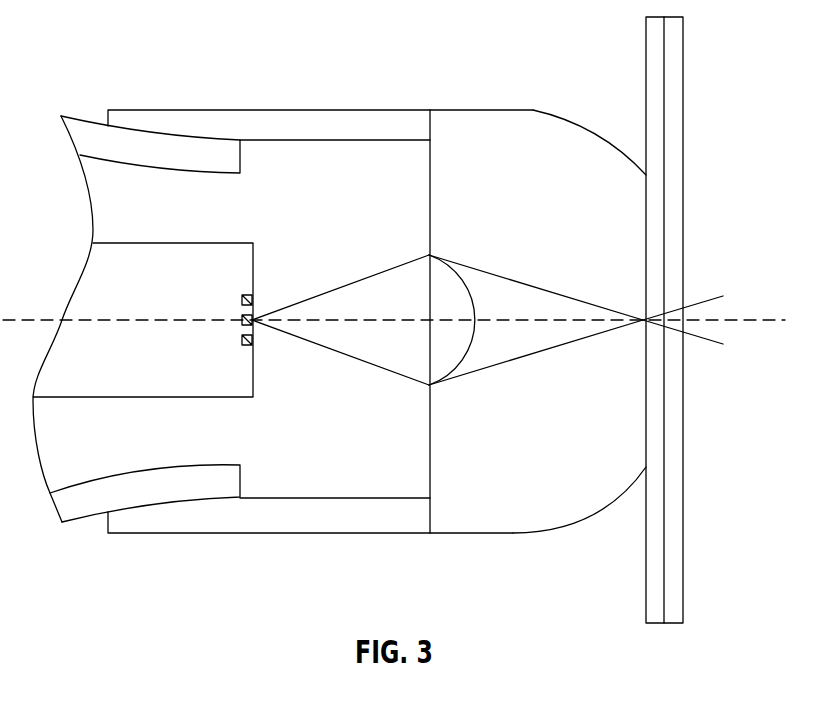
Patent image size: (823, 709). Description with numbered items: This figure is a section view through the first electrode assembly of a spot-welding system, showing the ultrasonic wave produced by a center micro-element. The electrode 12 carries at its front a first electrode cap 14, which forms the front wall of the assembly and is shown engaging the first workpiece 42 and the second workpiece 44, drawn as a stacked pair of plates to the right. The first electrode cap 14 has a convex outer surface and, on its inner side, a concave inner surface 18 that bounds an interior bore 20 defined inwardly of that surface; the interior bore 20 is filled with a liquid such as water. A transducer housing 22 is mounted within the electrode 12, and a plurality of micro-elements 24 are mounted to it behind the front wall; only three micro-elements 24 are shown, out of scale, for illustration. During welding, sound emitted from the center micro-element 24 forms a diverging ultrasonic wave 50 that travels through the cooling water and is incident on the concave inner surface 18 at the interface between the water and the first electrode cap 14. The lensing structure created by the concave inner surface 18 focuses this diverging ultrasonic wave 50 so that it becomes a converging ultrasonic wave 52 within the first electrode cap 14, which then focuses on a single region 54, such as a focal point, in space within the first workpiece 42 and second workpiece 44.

The electrode 12 is at (162, 134).
The first electrode cap 14 is at (545, 110).
The concave inner surface 18 is at (462, 362).
The interior bore 20 is at (378, 217).
The transducer housing 22 is at (198, 243).
The micro-elements 24 is at (242, 340).
The first workpiece 42 is at (646, 47).
The second workpiece 44 is at (683, 47).
The diverging ultrasonic wave 50 is at (367, 275).
The converging ultrasonic wave 52 is at (525, 283).
The single region 54 is at (707, 297).